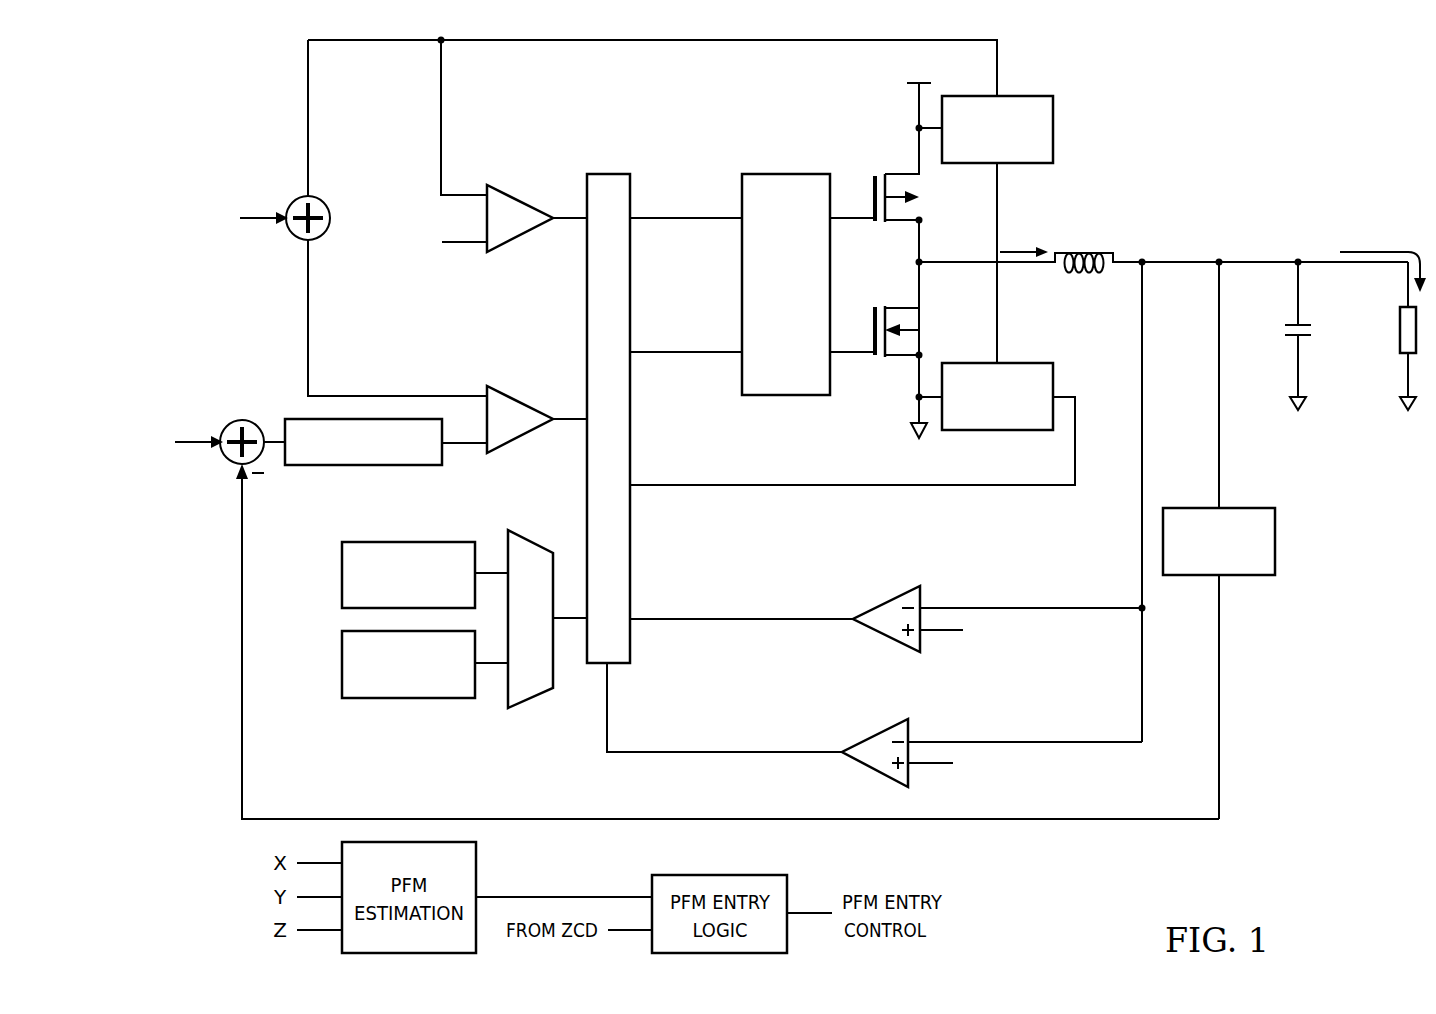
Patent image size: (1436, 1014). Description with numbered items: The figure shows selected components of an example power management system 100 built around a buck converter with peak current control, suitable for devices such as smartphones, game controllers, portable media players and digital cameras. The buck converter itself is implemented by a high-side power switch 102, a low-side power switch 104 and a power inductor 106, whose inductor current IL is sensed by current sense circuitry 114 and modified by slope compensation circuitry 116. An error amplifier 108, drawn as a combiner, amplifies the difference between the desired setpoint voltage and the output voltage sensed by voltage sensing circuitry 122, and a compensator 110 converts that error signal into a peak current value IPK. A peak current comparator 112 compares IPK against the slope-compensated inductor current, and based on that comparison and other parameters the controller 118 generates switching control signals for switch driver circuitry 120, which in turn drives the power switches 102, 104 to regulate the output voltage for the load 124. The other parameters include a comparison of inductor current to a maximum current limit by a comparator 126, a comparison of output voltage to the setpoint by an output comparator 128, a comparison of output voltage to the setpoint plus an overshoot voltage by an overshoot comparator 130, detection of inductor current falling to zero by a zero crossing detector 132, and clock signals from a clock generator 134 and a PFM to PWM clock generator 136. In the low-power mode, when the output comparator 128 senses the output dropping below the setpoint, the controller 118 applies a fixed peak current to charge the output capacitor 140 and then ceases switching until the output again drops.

The power management system 100 is at (1150, 122).
The power switch 102 is at (870, 176).
The power switch 104 is at (870, 310).
The power inductor 106 is at (1086, 252).
The error amplifier 108 is at (237, 419).
The compensator 110 is at (365, 465).
The peak current comparator 112 is at (520, 397).
The current sense circuitry 114 is at (1030, 96).
The slope compensation circuitry 116 is at (293, 202).
The controller 118 is at (597, 174).
The switch driver circuitry 120 is at (766, 318).
The voltage sensing circuitry 122 is at (1275, 542).
The load 124 is at (1400, 333).
The comparator 126 is at (523, 198).
The output comparator 128 is at (887, 598).
The overshoot comparator 130 is at (875, 732).
The zero crossing detector (ZCD) 132 is at (1053, 385).
The clock generator 134 is at (342, 585).
The PFM to PWM clock generator 136 is at (342, 673).
The output capacitor 140 is at (1312, 328).